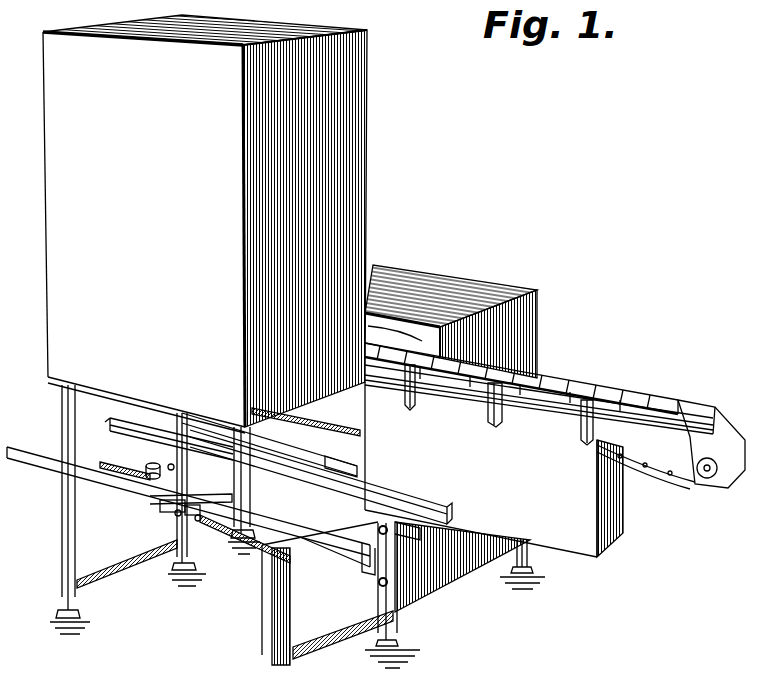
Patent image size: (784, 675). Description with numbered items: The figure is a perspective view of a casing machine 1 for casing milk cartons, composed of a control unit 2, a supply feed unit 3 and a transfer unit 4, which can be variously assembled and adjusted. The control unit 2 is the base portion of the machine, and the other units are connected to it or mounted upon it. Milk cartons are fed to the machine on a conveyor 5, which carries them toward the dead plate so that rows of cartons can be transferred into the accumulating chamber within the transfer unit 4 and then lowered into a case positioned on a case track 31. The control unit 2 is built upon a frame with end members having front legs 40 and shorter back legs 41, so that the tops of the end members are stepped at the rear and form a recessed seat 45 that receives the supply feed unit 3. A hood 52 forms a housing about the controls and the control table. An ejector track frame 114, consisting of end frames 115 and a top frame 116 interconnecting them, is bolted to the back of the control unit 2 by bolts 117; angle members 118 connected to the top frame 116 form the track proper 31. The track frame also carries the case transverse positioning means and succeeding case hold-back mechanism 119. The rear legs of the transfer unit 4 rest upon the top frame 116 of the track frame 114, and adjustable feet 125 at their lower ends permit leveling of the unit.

The casing machine 1 is at (392, 258).
The control unit 2 is at (527, 345).
The supply feed unit 3 is at (507, 468).
The transfer unit 4 is at (158, 237).
The conveyor 5 is at (700, 479).
The case track 31 is at (413, 492).
The front legs 40 is at (531, 545).
The back legs 41 is at (400, 620).
The recessed seat 45 is at (368, 326).
The hood 52 is at (493, 288).
The ejector track frame 114 is at (317, 527).
The end frames 115 is at (110, 565).
The top frame 116 is at (120, 462).
The bolts 117 is at (178, 475).
The angle members 118 is at (340, 566).
The case hold-back mechanism 119 is at (150, 498).
The adjustable feet 125 is at (57, 471).